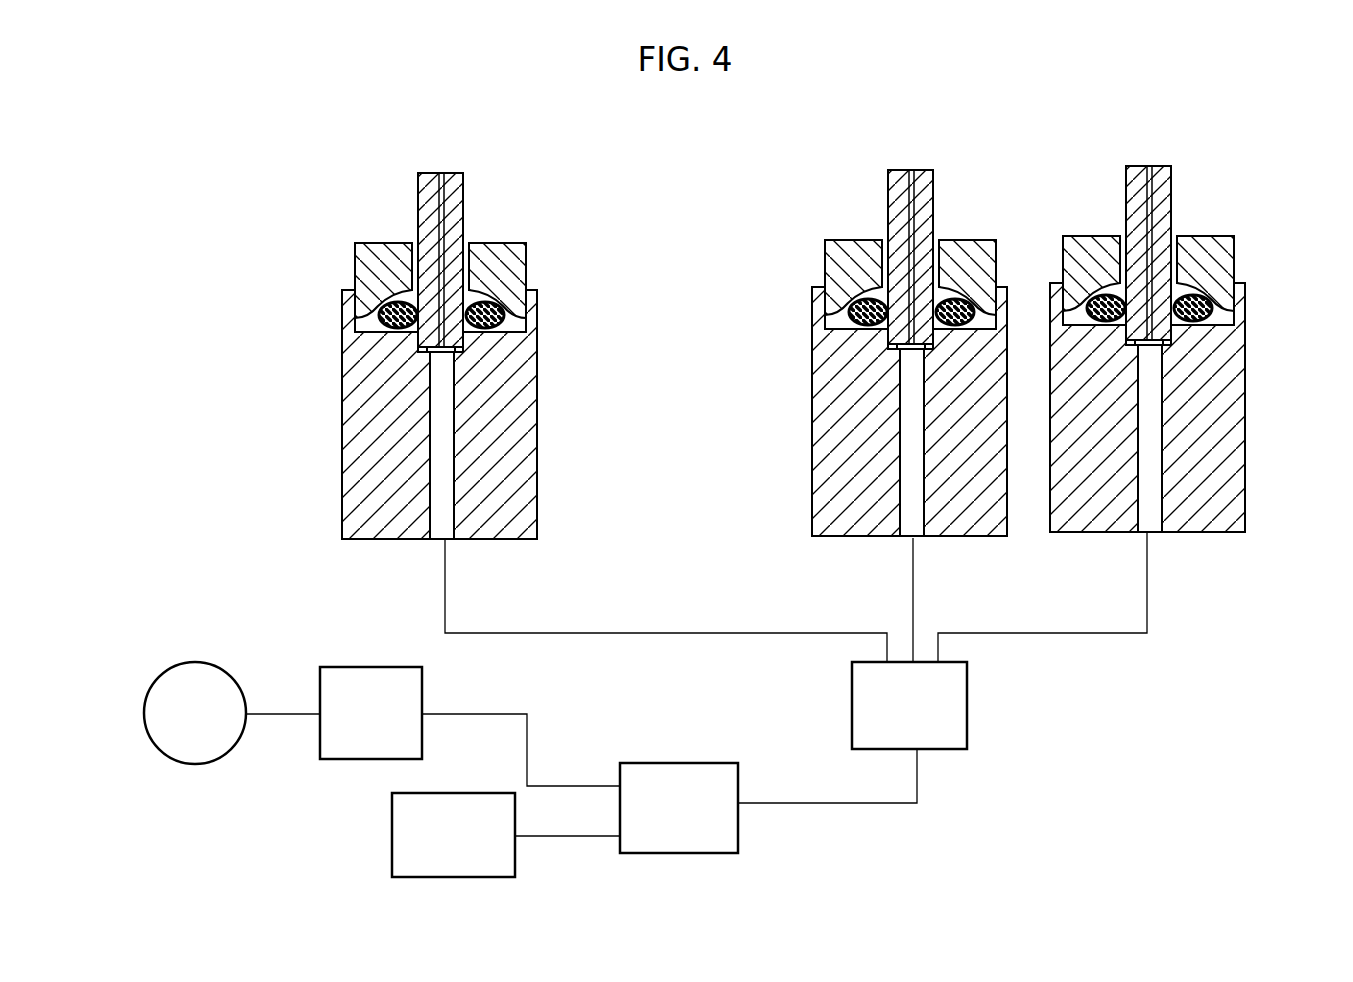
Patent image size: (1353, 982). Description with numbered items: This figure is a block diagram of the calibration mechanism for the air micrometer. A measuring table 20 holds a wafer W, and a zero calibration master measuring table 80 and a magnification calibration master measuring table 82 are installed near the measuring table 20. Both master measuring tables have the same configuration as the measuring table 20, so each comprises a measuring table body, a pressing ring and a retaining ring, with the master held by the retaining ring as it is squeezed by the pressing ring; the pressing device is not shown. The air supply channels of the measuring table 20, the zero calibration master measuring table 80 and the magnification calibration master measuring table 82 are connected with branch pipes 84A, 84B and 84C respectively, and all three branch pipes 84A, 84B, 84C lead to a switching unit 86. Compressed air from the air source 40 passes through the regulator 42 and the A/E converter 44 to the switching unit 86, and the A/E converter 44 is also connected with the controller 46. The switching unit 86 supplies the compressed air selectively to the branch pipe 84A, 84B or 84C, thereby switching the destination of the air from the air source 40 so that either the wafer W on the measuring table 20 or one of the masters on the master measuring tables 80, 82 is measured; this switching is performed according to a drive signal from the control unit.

The measuring table 20 is at (399, 321).
The wafer W is at (462, 173).
The zero calibration master measuring table 80 is at (871, 327).
The magnification calibration master measuring table 82 is at (1179, 321).
The branch pipe 84A is at (604, 633).
The branch pipe 84B is at (913, 586).
The branch pipe 84C is at (1026, 633).
The switching unit 86 is at (967, 726).
The A/E converter 44 is at (676, 763).
The controller 46 is at (392, 827).
The regulator 42 is at (376, 667).
The air source 40 is at (235, 673).